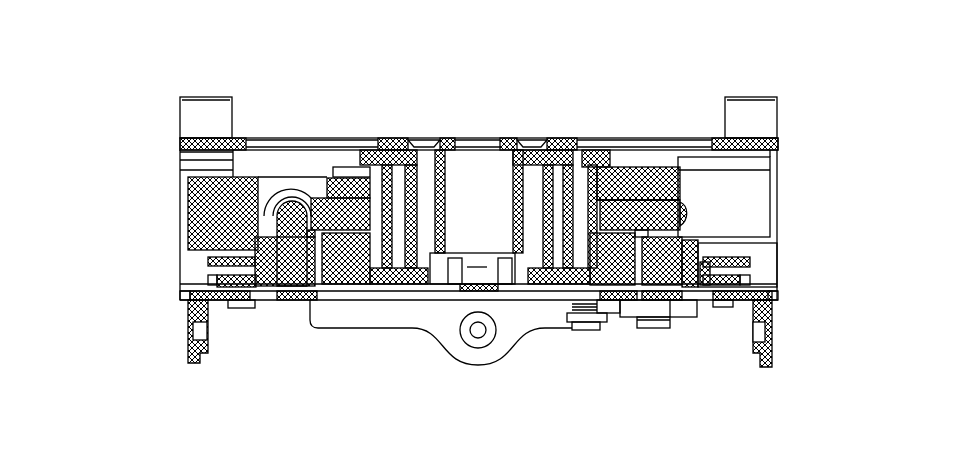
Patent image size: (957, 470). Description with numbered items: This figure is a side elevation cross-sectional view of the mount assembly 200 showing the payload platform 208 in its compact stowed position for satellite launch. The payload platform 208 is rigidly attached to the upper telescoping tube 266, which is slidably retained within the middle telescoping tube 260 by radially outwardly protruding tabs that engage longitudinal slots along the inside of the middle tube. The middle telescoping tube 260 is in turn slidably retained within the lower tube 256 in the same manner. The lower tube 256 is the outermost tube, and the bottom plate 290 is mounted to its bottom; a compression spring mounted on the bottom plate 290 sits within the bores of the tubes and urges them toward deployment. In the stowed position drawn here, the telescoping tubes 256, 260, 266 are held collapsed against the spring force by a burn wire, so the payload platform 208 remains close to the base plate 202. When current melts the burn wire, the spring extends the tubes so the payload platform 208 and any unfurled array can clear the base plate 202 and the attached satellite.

The dispensing assembly 200 is at (97, 136).
The base plate 202 is at (772, 312).
The payload platform 208 is at (290, 145).
The lower tube 256 is at (590, 147).
The middle telescoping tube 260 is at (547, 147).
The upper telescoping tube 266 is at (430, 147).
The bottom plate 290 is at (488, 292).